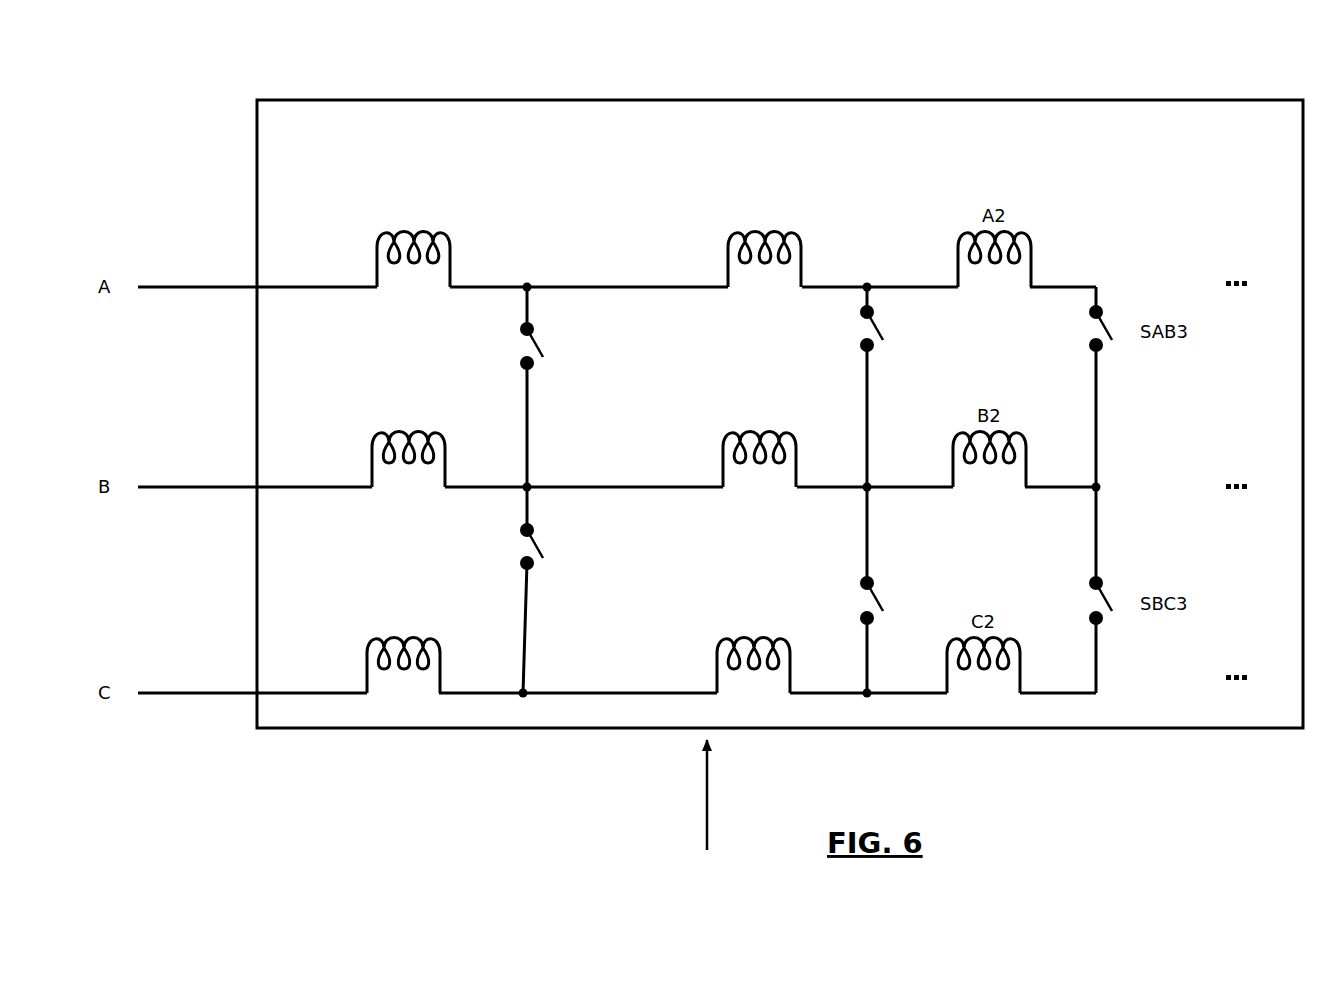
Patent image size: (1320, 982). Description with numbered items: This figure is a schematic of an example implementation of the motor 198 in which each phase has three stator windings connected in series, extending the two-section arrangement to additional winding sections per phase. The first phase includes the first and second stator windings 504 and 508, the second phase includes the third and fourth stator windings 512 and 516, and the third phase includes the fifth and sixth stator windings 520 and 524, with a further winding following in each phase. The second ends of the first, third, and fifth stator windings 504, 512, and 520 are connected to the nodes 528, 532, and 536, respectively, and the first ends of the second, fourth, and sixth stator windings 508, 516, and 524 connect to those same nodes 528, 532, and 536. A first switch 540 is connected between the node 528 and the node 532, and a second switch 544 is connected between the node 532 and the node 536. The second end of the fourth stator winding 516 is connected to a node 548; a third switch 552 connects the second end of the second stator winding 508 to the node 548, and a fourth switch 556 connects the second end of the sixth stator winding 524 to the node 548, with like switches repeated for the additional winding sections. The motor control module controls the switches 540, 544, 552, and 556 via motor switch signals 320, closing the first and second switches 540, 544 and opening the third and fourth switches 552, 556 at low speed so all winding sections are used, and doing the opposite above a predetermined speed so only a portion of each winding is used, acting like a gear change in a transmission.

The motor 198 is at (773, 100).
The motor switch signals 320 is at (707, 786).
The first stator winding (A1) 504 is at (378, 207).
The second stator winding (A2) 508 is at (730, 207).
The third stator winding (B1) 512 is at (378, 410).
The fourth stator winding (B2) 516 is at (730, 410).
The fifth stator winding (C1) 520 is at (378, 624).
The sixth stator winding (C2) 524 is at (730, 624).
The node 528 is at (527, 287).
The node 532 is at (527, 487).
The node 536 is at (523, 693).
The first switch (SAB1) 540 is at (503, 348).
The second switch (SBC1) 544 is at (503, 549).
The node 548 is at (867, 487).
The third switch (SAB2) 552 is at (830, 322).
The fourth switch (SBC2) 556 is at (830, 575).